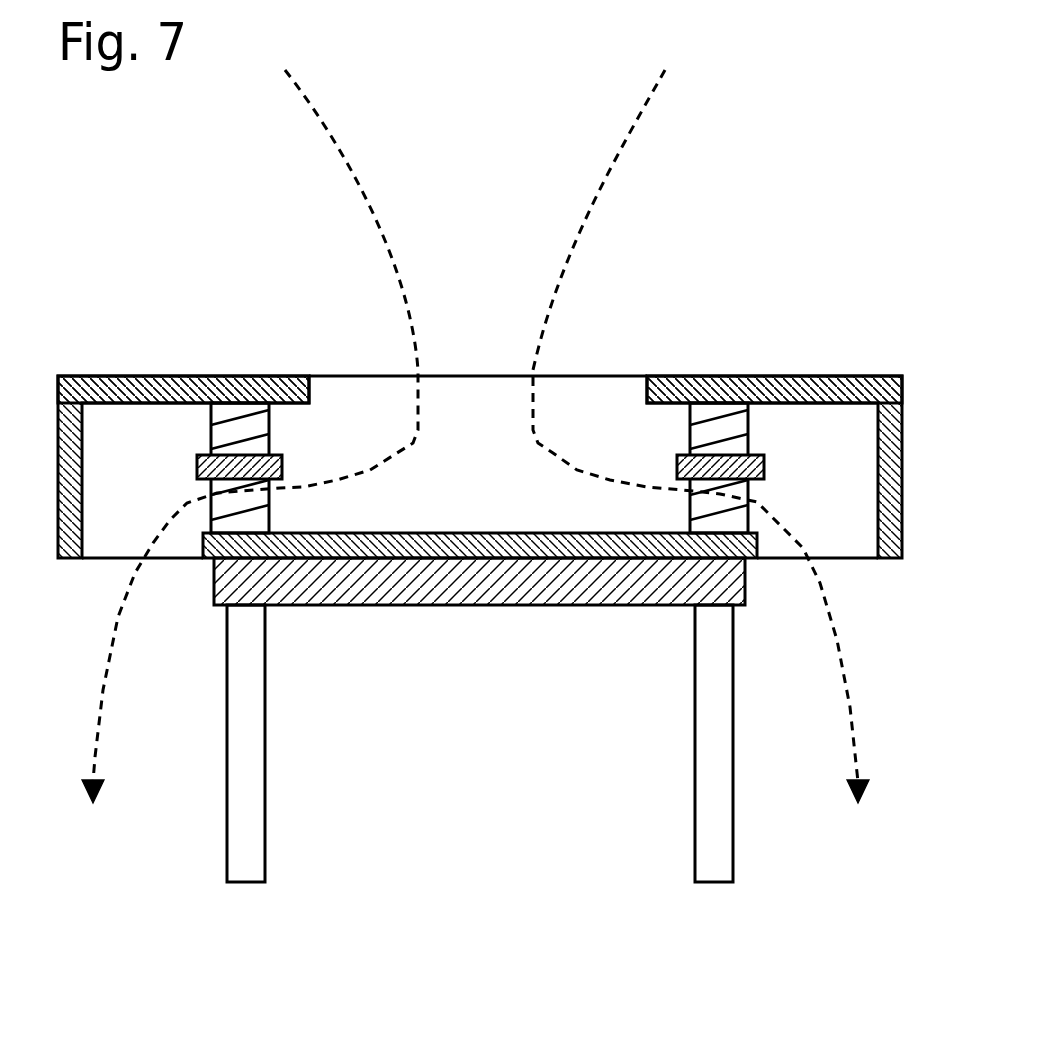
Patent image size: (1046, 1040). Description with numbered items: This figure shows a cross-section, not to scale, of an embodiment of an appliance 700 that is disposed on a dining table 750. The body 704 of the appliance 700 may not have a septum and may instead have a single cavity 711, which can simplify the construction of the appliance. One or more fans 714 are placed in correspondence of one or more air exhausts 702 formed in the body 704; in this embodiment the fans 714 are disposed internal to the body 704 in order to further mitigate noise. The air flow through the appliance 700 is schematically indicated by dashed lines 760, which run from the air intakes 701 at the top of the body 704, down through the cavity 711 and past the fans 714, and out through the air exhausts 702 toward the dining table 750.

The appliance 700 is at (135, 355).
The air intakes 701 is at (339, 364).
The body 704 is at (832, 362).
The cavity 711 is at (445, 448).
The air exhausts 702 is at (98, 574).
The fans 714 is at (300, 450).
The dining table 750 is at (500, 624).
The lines 760 is at (475, 418).